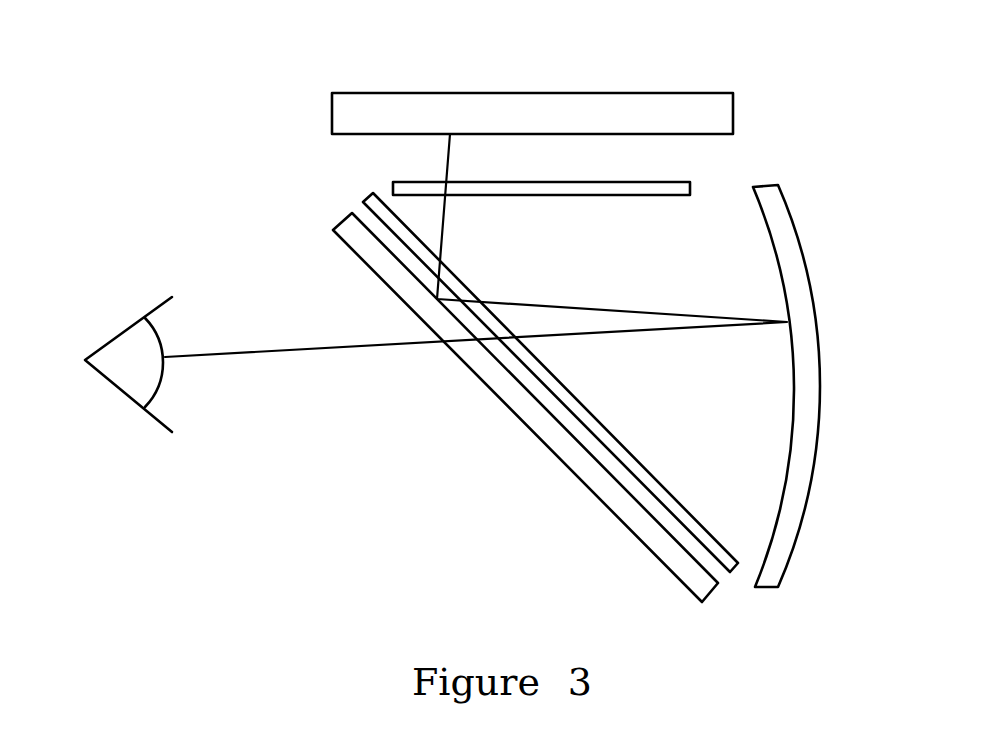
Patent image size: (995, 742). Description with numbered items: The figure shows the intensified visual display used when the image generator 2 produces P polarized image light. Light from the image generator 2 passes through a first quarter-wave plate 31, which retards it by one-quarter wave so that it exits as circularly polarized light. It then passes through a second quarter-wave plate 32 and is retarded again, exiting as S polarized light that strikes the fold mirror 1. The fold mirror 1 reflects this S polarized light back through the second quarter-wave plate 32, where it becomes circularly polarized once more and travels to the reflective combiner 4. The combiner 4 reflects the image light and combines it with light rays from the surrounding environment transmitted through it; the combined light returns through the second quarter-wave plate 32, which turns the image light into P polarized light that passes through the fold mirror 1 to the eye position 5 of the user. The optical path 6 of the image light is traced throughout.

The fold mirror 1 is at (490, 392).
The image generator 2 is at (330, 108).
The reflective combiner 4 is at (817, 350).
The eye position 5 is at (117, 393).
The optical path 6 is at (453, 152).
The first quarter-wave plate 31 is at (693, 180).
The second quarter-wave plate 32 is at (358, 197).